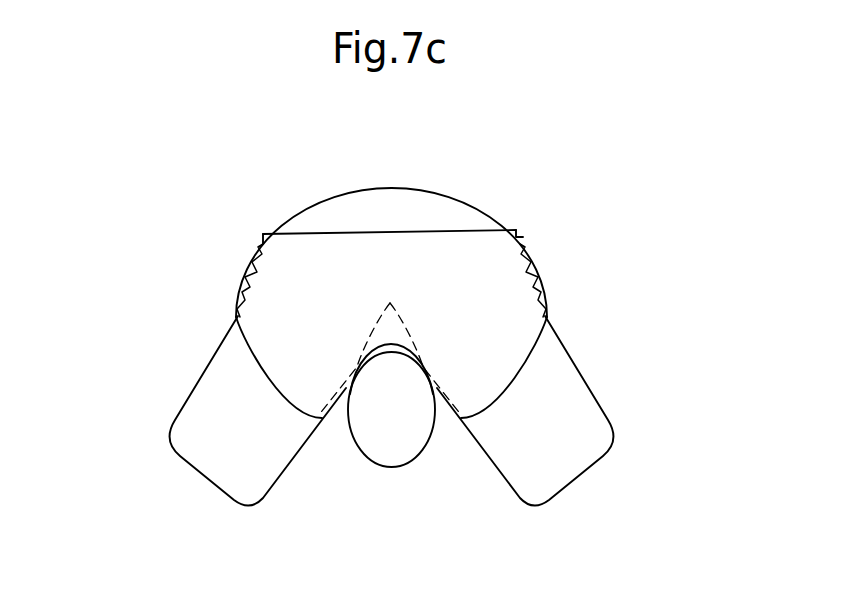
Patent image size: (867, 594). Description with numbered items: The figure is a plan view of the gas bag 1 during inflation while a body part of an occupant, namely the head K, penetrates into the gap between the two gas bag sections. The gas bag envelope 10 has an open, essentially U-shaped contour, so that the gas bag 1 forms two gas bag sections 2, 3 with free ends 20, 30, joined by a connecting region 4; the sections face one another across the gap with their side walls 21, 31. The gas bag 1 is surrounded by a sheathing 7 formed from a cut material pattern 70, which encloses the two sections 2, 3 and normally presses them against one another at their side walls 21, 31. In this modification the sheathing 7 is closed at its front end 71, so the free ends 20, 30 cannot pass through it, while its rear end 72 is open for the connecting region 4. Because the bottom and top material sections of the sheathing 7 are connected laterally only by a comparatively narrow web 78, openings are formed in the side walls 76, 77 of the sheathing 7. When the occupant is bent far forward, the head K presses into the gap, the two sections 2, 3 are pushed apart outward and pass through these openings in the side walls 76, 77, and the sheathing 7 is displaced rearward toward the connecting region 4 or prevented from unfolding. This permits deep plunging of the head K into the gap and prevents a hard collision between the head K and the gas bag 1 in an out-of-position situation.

The gas bag 1 is at (375, 142).
The gas bag envelope 10 is at (321, 198).
The connecting region 4 is at (402, 207).
The rear end of the sheathing 72 is at (463, 231).
The cut material pattern 70 is at (261, 242).
The sheathing 7 is at (531, 234).
The web 78 is at (248, 287).
The gas bag section 2 is at (205, 405).
The free end 20 is at (212, 477).
The side wall 21 is at (340, 390).
The side wall of the sheathing 76 is at (270, 387).
The gas bag section 3 is at (588, 410).
The free end 30 is at (570, 467).
The side wall 31 is at (433, 376).
The side wall of the sheathing 77 is at (517, 377).
The head K is at (392, 448).
The front end of the sheathing 71 is at (446, 392).